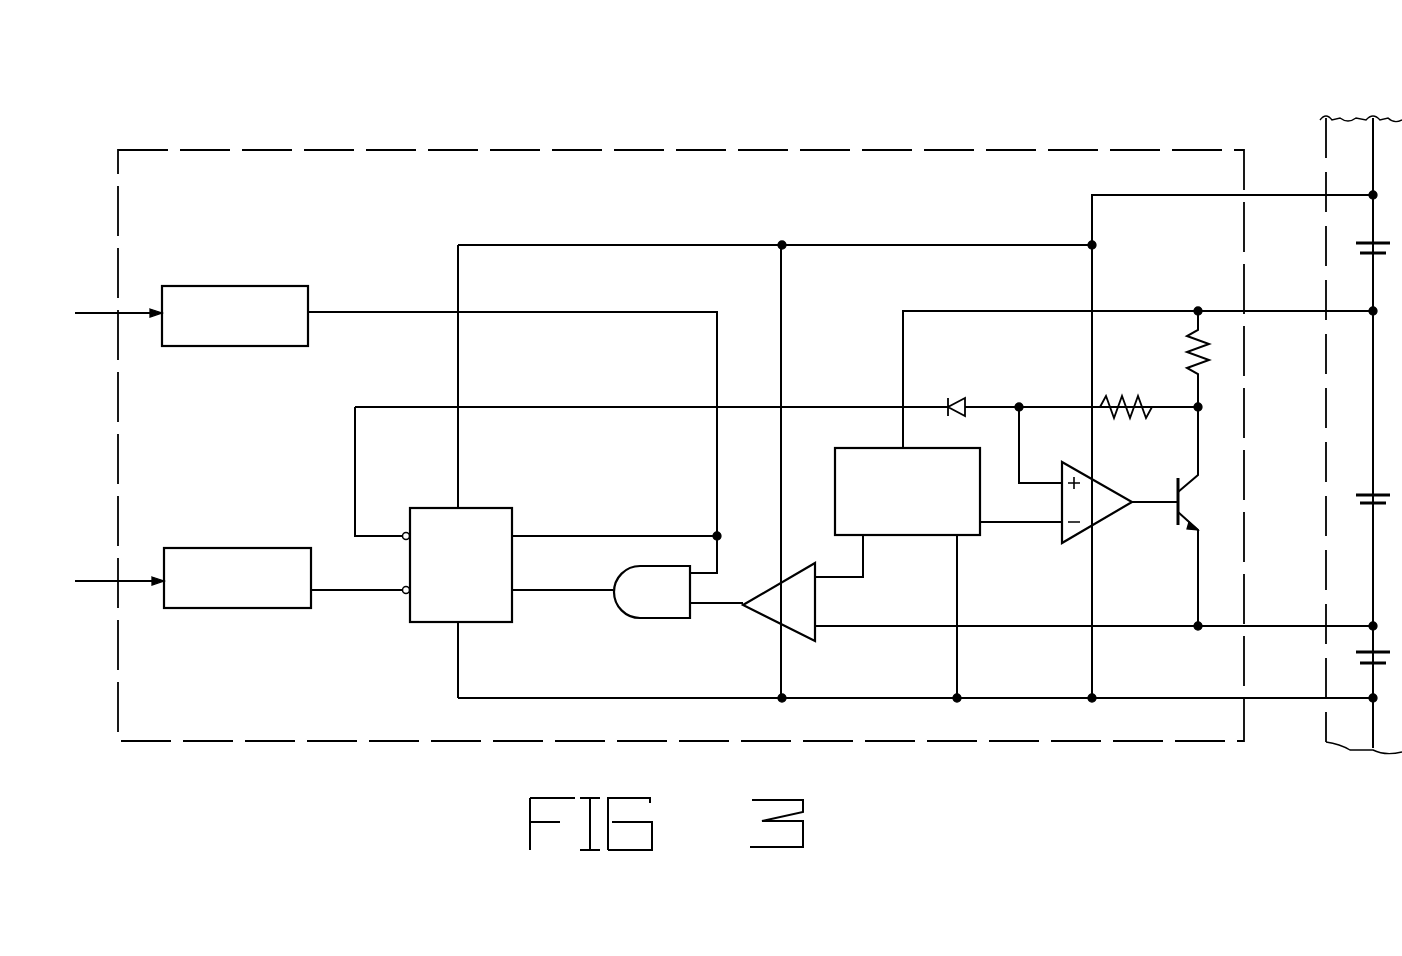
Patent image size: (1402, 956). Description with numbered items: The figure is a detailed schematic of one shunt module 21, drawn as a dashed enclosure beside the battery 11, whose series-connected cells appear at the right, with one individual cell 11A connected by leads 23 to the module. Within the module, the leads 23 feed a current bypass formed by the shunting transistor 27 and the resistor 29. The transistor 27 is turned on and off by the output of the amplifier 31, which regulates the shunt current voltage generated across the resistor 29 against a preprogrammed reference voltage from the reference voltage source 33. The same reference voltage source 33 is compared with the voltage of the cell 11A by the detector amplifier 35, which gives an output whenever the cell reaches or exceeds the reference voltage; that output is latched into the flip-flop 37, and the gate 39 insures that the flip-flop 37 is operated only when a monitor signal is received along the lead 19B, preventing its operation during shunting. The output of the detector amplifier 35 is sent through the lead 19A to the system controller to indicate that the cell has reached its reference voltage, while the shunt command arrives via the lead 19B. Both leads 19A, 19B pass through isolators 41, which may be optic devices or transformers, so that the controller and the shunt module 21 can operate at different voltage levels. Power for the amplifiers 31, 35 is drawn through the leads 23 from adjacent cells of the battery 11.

The shunt module 21 is at (443, 158).
The lead 19A is at (103, 581).
The lead 19B is at (103, 312).
The isolator 41 is at (258, 346).
The flip-flop 37 is at (505, 522).
The gate 39 is at (665, 612).
The detector amplifier 35 is at (800, 616).
The reference voltage source 33 is at (940, 525).
The amplifier 31 is at (1062, 504).
The shunting transistor 27 is at (1177, 490).
The resistor 29 is at (1188, 350).
The leads 23 is at (1284, 300).
The battery 11 is at (1330, 435).
The cell 11A is at (1360, 497).